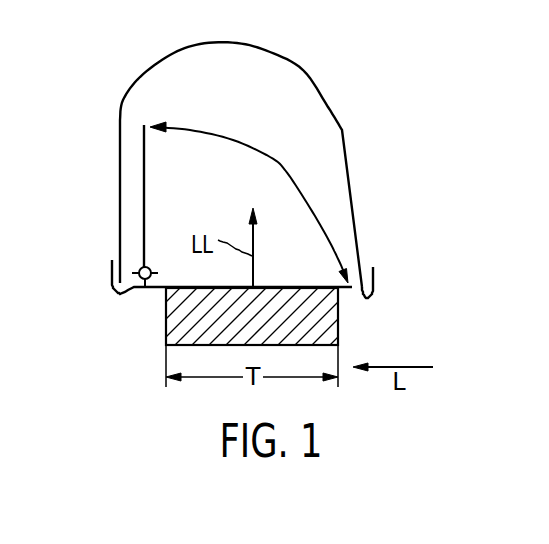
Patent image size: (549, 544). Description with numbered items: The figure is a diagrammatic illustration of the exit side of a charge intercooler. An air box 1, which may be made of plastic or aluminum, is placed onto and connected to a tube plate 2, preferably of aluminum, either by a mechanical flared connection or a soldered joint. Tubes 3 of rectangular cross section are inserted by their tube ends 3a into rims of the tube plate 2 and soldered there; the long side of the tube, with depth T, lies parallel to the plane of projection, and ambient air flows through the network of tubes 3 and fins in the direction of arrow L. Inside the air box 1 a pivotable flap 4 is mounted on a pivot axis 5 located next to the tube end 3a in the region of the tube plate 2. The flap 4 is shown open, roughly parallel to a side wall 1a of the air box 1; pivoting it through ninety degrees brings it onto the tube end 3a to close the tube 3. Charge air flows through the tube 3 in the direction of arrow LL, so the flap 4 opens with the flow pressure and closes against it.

The air box 1 is at (351, 144).
The side wall 1a is at (118, 237).
The tube plate 2 is at (121, 293).
The tubes 3 is at (339, 310).
The tube ends 3a is at (310, 287).
The pivotable flap 4 is at (143, 148).
The pivot axis 5 is at (143, 287).